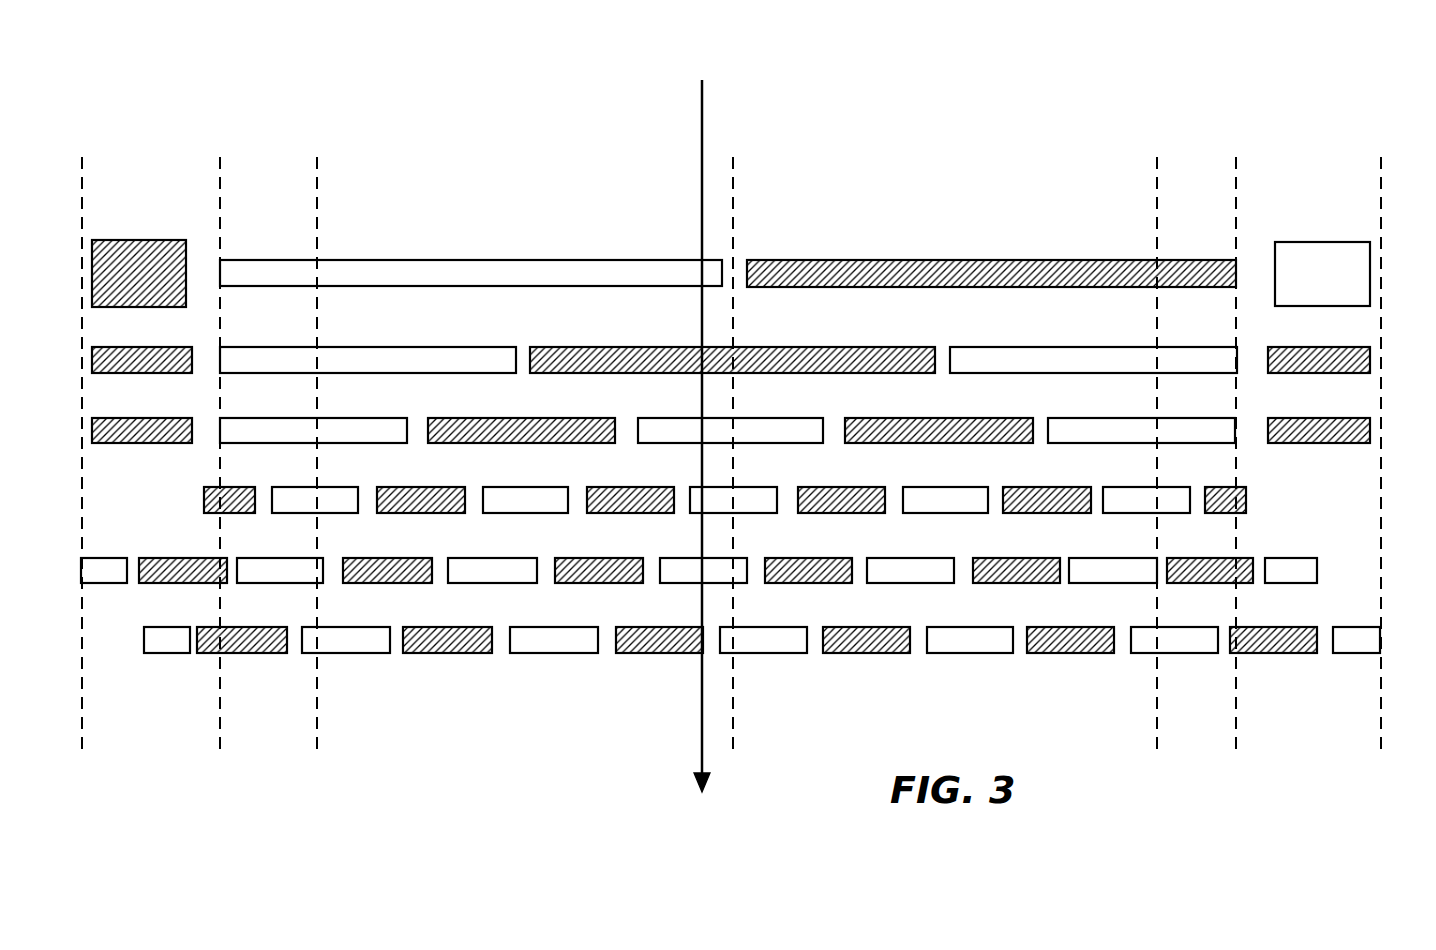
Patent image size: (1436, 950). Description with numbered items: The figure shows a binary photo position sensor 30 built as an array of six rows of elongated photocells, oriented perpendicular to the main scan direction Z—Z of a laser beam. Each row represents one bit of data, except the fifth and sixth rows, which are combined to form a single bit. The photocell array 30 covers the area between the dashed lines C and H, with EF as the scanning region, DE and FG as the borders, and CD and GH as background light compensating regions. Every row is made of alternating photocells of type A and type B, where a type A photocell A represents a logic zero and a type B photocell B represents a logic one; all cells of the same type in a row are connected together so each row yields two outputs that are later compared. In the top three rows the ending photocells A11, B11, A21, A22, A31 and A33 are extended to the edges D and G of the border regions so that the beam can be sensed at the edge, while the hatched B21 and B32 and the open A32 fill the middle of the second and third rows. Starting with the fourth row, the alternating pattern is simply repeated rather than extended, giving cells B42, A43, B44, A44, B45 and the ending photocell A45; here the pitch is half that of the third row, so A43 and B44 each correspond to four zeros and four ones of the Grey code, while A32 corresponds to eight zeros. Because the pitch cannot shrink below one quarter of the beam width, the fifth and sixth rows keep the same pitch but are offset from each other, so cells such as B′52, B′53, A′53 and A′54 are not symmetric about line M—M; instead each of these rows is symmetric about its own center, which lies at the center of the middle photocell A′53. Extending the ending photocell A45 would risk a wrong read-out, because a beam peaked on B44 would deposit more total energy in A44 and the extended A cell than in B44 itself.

The binary photo position sensor 30 is at (1244, 90).
The type A photocell A is at (1325, 242).
The type B photocell B is at (139, 240).
The ending photocell A11 is at (465, 260).
The ending photocell B11 is at (996, 260).
The ending photocell A21 is at (359, 347).
The photocell B21 is at (813, 347).
The ending photocell A22 is at (1026, 347).
The ending photocell A31 is at (371, 418).
The photocell A32 is at (769, 418).
The photocell B32 is at (911, 418).
The ending photocell A33 is at (1084, 418).
The photocell B42 is at (413, 487).
The photocell A43 is at (748, 487).
The photocell B44 is at (826, 487).
The photocell A44 is at (921, 487).
The photocell B45 is at (1050, 487).
The ending photocell A45 is at (1140, 487).
The photocell B′52 is at (373, 558).
The photocell B′53 is at (600, 558).
The middle photocell A′53 is at (690, 558).
The photocell A′54 is at (915, 558).